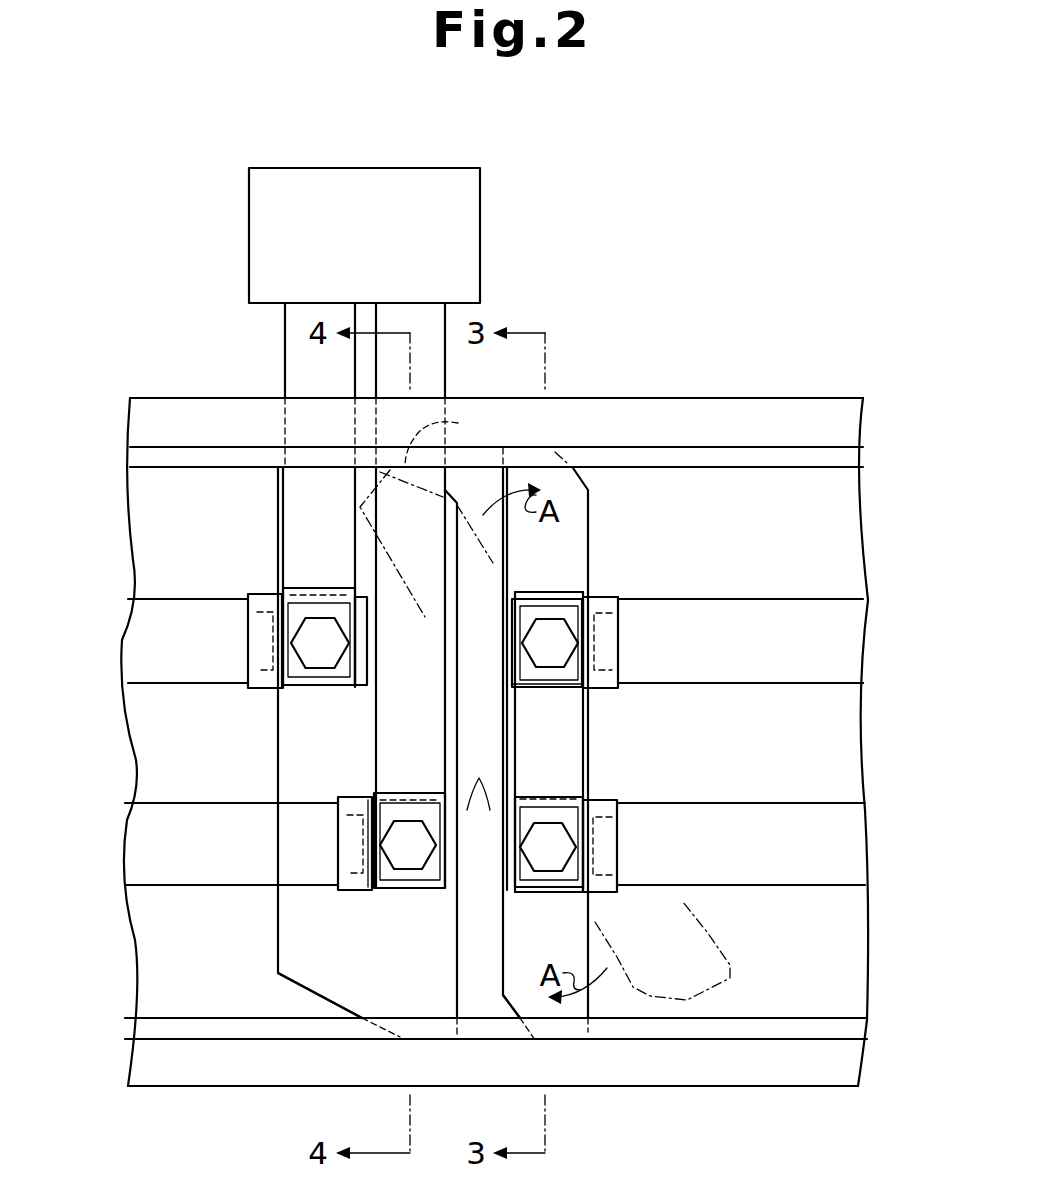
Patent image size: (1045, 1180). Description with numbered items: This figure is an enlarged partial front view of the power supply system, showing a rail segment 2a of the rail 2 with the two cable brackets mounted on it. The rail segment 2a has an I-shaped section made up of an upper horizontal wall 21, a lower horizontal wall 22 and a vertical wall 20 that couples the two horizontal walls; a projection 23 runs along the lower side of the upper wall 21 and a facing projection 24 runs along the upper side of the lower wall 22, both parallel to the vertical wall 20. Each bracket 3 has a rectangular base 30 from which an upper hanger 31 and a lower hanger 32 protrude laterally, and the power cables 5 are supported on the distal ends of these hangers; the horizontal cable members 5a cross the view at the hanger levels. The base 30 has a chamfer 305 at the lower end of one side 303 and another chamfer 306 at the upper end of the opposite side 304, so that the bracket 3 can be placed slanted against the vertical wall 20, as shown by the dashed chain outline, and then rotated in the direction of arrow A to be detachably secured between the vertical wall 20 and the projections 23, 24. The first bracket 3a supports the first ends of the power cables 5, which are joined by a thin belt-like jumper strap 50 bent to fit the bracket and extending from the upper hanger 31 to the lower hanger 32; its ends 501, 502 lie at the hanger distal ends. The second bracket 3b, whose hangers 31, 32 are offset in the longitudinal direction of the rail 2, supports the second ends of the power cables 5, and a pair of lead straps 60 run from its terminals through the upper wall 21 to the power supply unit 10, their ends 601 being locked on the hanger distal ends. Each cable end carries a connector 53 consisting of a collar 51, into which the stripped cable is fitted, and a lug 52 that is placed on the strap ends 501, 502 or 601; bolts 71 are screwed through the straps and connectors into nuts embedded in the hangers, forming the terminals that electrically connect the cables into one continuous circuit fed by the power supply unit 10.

The power supply unit 10 is at (479, 230).
The rail 2 is at (782, 360).
The rail segment 2a is at (849, 396).
The vertical wall 20 is at (865, 528).
The upper horizontal wall 21 is at (706, 410).
The lower horizontal wall 22 is at (786, 1068).
The projection 23 is at (793, 468).
The projection 24 is at (813, 1030).
The bracket 3 is at (590, 500).
The first bracket 3a is at (735, 940).
The second bracket 3b is at (278, 946).
The base 30 is at (288, 904).
The upper hanger 31 is at (367, 642).
The lower hanger 32 is at (479, 774).
The side 303 is at (503, 714).
The opposite side 304 is at (457, 573).
The chamfer 305 is at (308, 990).
The chamfer 306 is at (460, 424).
The power cable 5 is at (792, 685).
The beam member 5a is at (142, 644).
The jumper strap 50 is at (577, 773).
The end of jumper strap 501 is at (582, 597).
The end of jumper strap 502 is at (545, 890).
The collar 51 is at (265, 596).
The lug 52 is at (300, 603).
The connector 53 is at (260, 688).
The lead strap 60 is at (302, 497).
The end of lead strap 601 is at (313, 686).
The bolt 71 is at (308, 643).